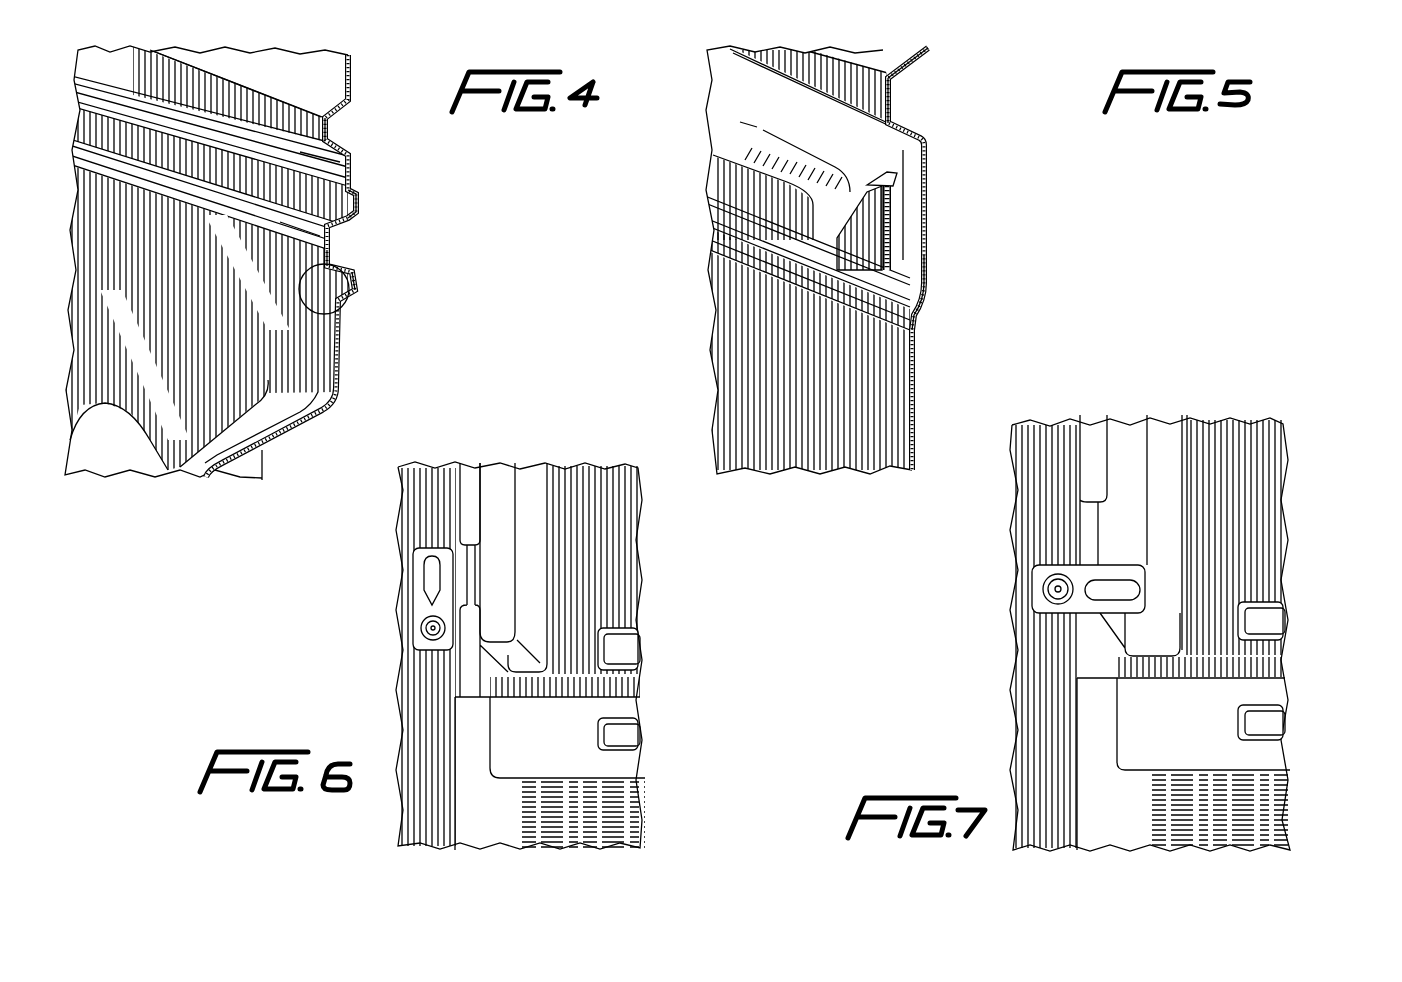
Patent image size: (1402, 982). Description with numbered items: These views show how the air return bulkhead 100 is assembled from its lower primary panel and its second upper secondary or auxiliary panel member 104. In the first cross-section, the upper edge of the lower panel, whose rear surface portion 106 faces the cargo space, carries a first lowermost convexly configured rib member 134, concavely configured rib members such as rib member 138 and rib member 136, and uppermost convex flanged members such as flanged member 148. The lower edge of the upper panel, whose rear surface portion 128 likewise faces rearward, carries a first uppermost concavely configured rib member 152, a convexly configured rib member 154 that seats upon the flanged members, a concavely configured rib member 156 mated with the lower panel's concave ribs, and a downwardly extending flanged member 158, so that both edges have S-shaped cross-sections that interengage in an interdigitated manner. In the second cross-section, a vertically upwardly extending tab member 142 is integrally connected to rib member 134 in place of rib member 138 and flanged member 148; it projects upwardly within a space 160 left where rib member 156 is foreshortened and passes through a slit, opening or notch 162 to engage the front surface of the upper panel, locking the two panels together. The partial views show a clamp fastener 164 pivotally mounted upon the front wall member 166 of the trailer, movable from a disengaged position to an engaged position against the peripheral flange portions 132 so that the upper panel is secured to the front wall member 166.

In FIG. 4, the air return bulkhead 100 is at (333, 29).
In FIG. 5, the air return bulkhead 100 is at (900, 30).
In FIG. 6, the second upper secondary or auxiliary panel member 104 is at (622, 508).
In FIG. 7, the second upper secondary or auxiliary panel member 104 is at (1237, 465).
In FIG. 4, the rear surface portion 106 is at (340, 362).
In FIG. 5, the rear surface portion 106 is at (912, 412).
In FIG. 4, the rear surface portion 128 is at (355, 76).
In FIG. 5, the rear surface portion 128 is at (925, 57).
In FIG. 6, the peripheral flange portions 132 is at (500, 558).
In FIG. 7, the peripheral flange portions 132 is at (1127, 477).
In FIG. 4, the first lowermost convexly configured rib member 134 is at (356, 280).
In FIG. 5, the first lowermost convexly configured rib member 134 is at (930, 300).
In FIG. 6, the concavely configured rib member 136 is at (625, 737).
In FIG. 7, the concavely configured rib member 136 is at (1262, 730).
In FIG. 4, the concavely configured rib member 138 is at (335, 244).
In FIG. 5, the tab member 142 is at (870, 227).
In FIG. 4, the convexly configured upwardly extending flanged member 148 is at (357, 204).
In FIG. 4, the first uppermost concavely configured rib member 152 is at (327, 117).
In FIG. 5, the first uppermost concavely configured rib member 152 is at (893, 102).
In FIG. 6, the first uppermost concavely configured rib member 152 is at (620, 648).
In FIG. 7, the first uppermost concavely configured rib member 152 is at (1267, 622).
In FIG. 4, the convexly configured rib member 154 is at (325, 160).
In FIG. 4, the concavely configured rib member 156 is at (300, 232).
In FIG. 5, the concavely configured rib member 156 is at (745, 190).
In FIG. 4, the convexly configured downwardly extending flanged member 158 is at (325, 287).
In FIG. 5, the space 160 is at (905, 200).
In FIG. 5, the slit, opening, or notch 162 is at (915, 262).
In FIG. 6, the clamp fastener 164 is at (420, 600).
In FIG. 7, the clamp fastener 164 is at (1037, 603).
In FIG. 6, the front wall member 166 is at (435, 737).
In FIG. 7, the front wall member 166 is at (1053, 714).